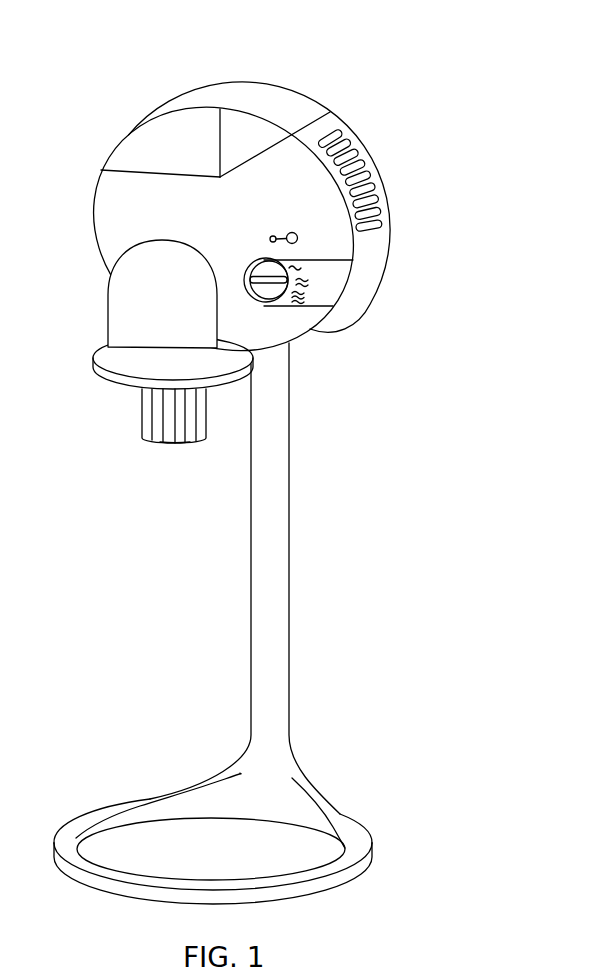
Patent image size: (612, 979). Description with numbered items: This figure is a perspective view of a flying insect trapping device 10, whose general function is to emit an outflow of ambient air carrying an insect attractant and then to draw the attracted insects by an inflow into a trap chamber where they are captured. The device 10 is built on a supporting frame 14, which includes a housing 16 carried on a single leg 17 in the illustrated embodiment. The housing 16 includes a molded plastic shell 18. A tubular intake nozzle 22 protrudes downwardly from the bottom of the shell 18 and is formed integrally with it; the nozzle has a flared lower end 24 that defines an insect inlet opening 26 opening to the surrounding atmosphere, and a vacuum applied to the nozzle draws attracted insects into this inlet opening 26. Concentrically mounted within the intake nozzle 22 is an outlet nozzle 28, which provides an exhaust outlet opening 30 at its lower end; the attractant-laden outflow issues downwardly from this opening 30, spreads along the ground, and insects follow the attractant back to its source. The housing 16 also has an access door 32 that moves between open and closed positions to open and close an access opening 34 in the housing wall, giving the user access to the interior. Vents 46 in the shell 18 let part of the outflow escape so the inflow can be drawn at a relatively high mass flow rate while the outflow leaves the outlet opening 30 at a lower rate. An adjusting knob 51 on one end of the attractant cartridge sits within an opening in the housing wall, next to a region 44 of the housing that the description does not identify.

The flying insect trapping device 10 is at (393, 82).
The supporting frame 14 is at (327, 463).
The housing 16 is at (104, 197).
The leg 17 is at (290, 577).
The shell 18 is at (166, 112).
The intake nozzle 22 is at (118, 307).
The flared lower end 24 is at (102, 356).
The insect inlet opening 26 is at (98, 370).
The outlet nozzle 28 is at (146, 426).
The exhaust outlet opening 30 is at (176, 445).
The access door 32 is at (275, 98).
The access opening 34 is at (319, 100).
The control panel 44 is at (330, 291).
The vents 46 is at (370, 167).
The adjusting knob 51 is at (263, 272).